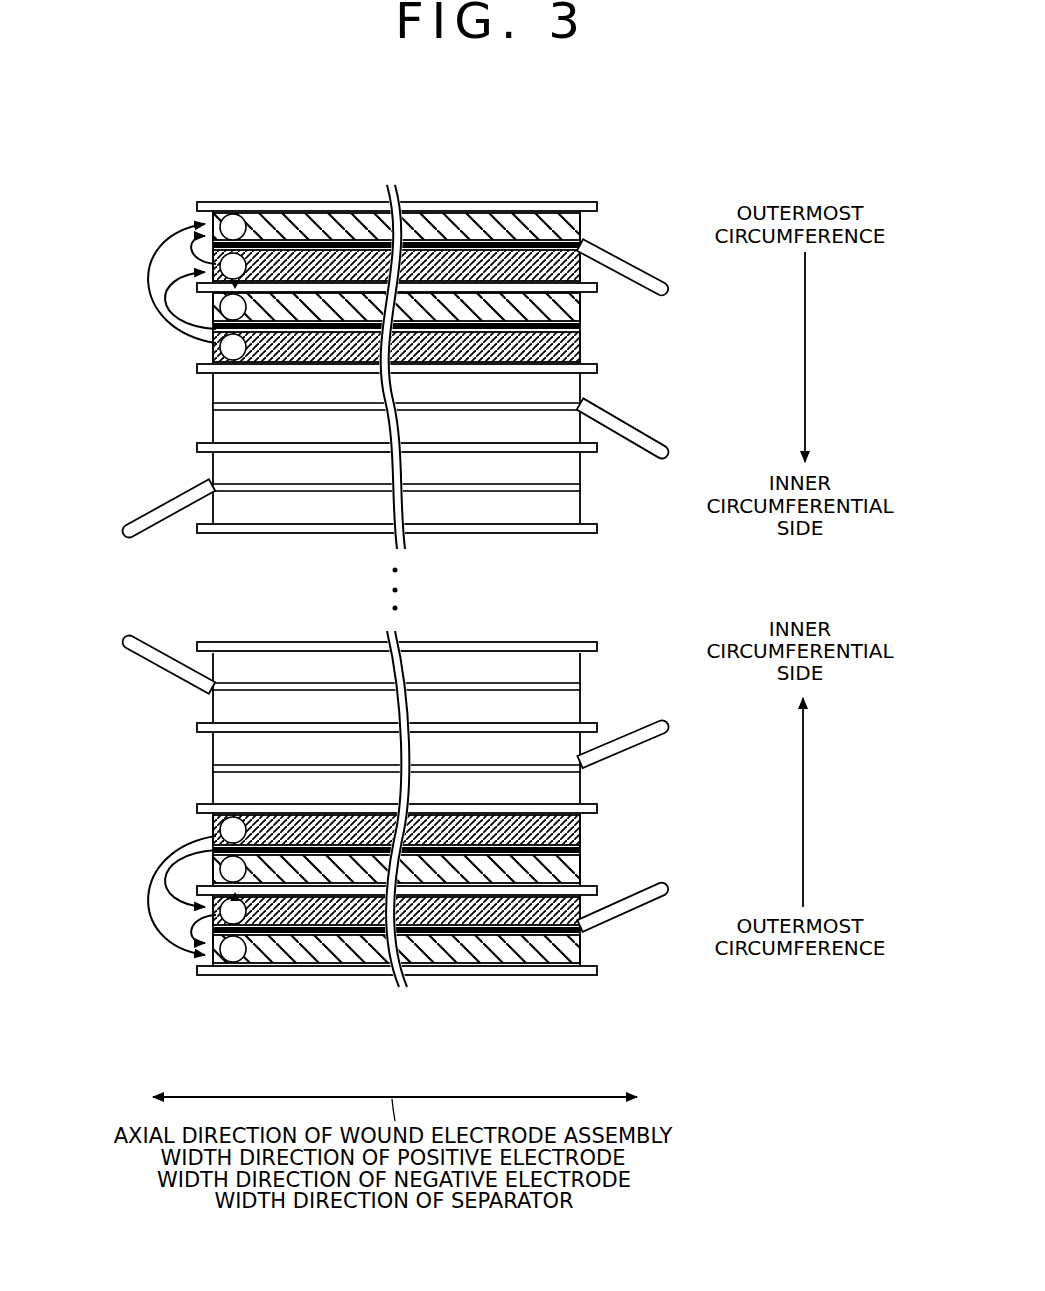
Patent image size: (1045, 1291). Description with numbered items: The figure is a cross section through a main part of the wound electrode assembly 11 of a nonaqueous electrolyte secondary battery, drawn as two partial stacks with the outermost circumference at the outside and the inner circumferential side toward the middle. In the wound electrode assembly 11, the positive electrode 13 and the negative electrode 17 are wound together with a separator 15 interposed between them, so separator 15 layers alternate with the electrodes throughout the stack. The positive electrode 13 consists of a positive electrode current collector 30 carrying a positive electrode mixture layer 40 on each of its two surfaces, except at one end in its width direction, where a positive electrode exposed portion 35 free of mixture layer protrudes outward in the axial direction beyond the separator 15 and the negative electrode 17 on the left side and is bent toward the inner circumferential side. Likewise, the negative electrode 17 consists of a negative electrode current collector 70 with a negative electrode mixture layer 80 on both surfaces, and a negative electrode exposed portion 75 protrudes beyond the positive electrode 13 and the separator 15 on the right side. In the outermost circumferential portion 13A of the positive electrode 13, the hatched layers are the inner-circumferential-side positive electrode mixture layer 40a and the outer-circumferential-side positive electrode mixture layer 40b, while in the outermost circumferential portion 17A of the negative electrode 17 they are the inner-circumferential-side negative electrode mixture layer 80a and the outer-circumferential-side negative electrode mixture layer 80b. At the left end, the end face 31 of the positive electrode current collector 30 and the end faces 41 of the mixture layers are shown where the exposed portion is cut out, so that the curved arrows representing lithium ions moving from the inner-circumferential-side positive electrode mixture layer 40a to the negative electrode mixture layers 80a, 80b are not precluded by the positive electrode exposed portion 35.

The wound electrode assembly 11 is at (630, 177).
The positive electrode 13 is at (639, 455).
The outermost circumferential portion of the positive electrode 13A is at (649, 292).
The separator 15 is at (249, 202).
The negative electrode 17 is at (151, 380).
The outermost circumferential portion of the negative electrode 17A is at (325, 140).
The positive electrode current collector 30 is at (572, 330).
The end face of the positive electrode current collector 31 is at (213, 346).
The positive electrode exposed portion 35 is at (167, 493).
The positive electrode mixture layer 40 is at (572, 468).
The inner-circumferential-side positive electrode mixture layer 40a is at (572, 352).
The outer-circumferential-side positive electrode mixture layer 40b is at (572, 306).
The end face of the positive electrode mixture layer 41 is at (213, 305).
The negative electrode current collector 70 is at (436, 243).
The negative electrode exposed portion 75 is at (626, 250).
The negative electrode mixture layer 80 is at (225, 387).
The inner-circumferential-side negative electrode mixture layer 80a is at (500, 262).
The outer-circumferential-side negative electrode mixture layer 80b is at (341, 222).